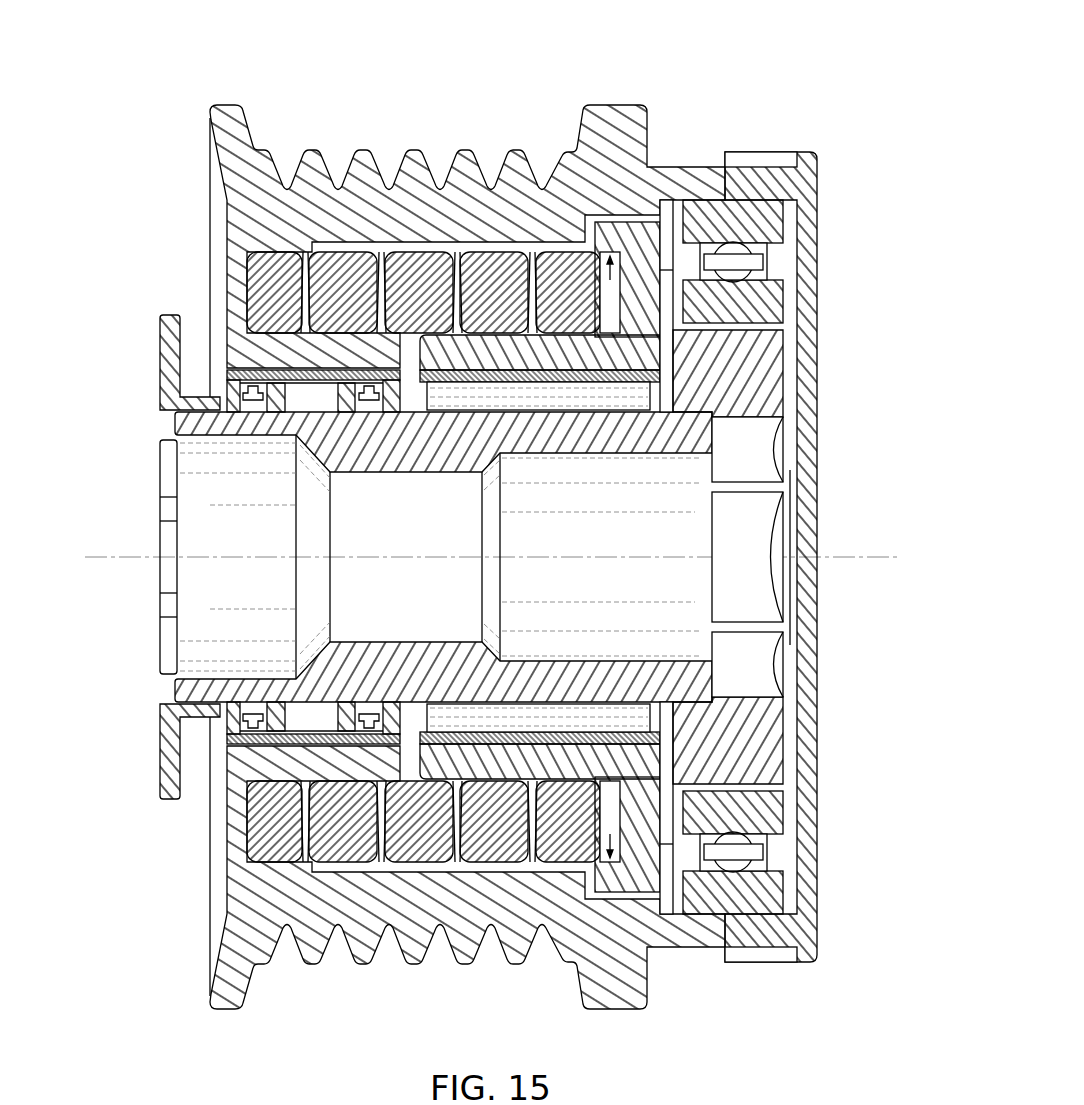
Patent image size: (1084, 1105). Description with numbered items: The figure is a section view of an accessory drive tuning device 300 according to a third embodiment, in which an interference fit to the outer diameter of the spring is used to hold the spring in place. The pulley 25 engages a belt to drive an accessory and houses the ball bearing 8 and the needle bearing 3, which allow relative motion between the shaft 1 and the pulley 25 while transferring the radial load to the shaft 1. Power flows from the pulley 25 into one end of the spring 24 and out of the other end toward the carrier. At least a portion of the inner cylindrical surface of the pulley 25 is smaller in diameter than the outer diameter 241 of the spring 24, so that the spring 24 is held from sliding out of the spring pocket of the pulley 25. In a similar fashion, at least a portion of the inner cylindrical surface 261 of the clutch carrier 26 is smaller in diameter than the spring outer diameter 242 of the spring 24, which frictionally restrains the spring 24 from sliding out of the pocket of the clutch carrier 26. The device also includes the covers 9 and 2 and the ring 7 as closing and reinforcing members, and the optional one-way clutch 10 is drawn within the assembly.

The shaft 1 is at (190, 423).
The cover 2 is at (170, 370).
The needle bearing 3 is at (250, 398).
The ring 7 is at (667, 217).
The ball bearing 8 is at (760, 225).
The cover 9 is at (803, 230).
The one-way clutch 10 is at (715, 430).
The spring 24 is at (260, 272).
The pulley 25 is at (232, 135).
The clutch carrier 26 is at (622, 230).
The outer diameter of spring 241 is at (268, 250).
The spring outer diameter 242 is at (562, 250).
The inner cylindrical surface of clutch carrier 261 is at (620, 275).
The accessory drive tuning device 300 is at (492, 504).